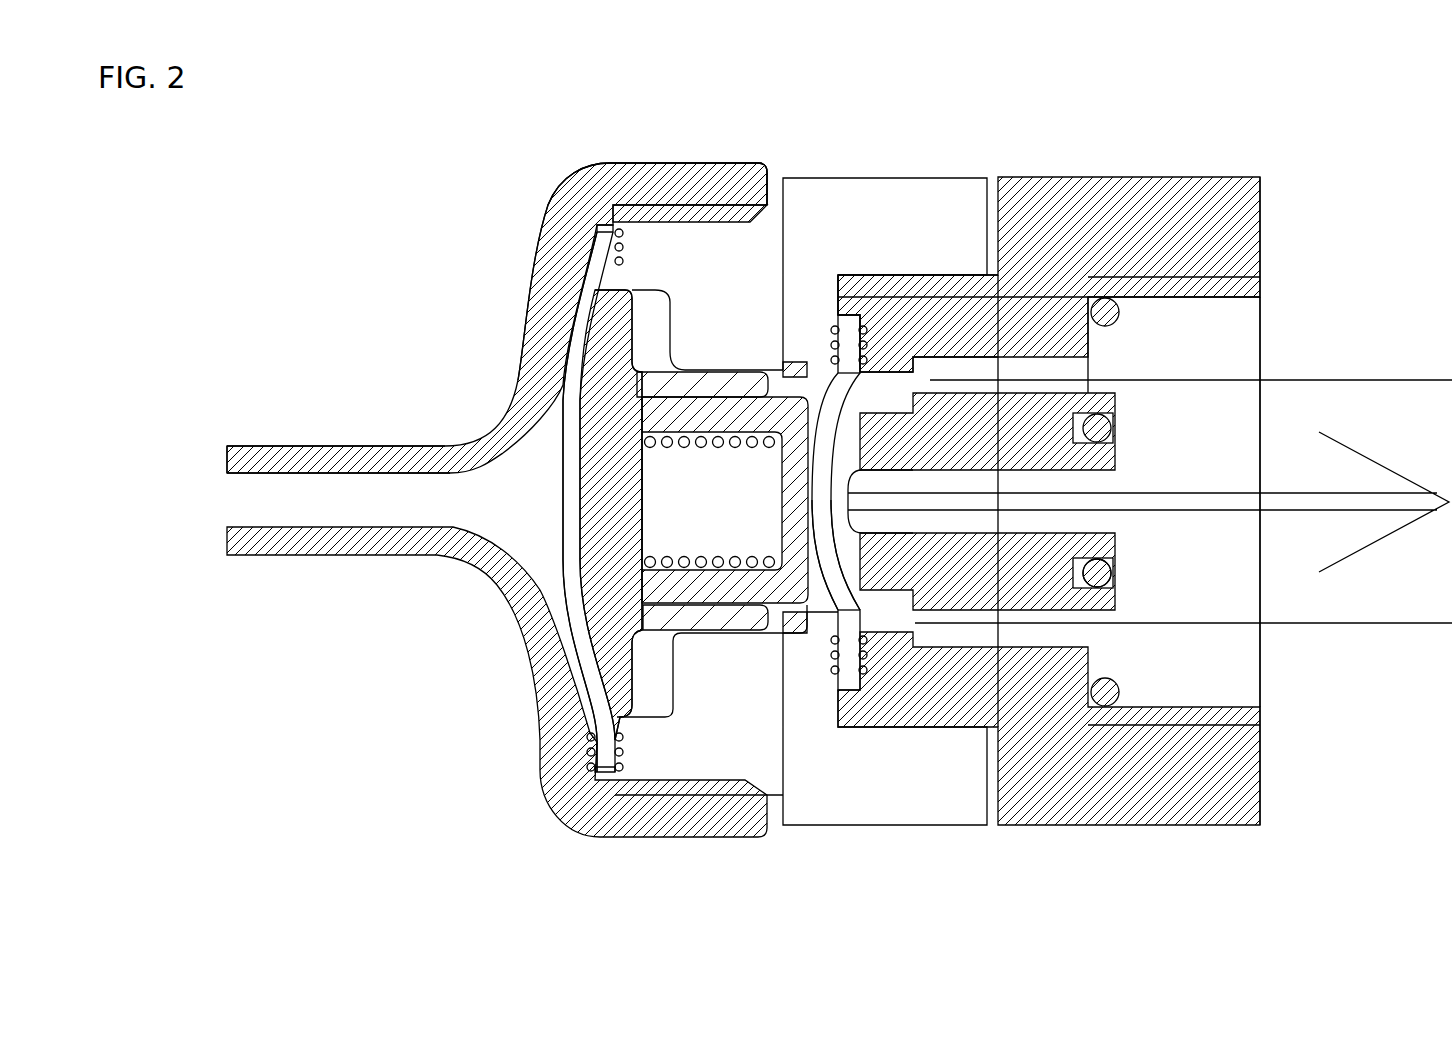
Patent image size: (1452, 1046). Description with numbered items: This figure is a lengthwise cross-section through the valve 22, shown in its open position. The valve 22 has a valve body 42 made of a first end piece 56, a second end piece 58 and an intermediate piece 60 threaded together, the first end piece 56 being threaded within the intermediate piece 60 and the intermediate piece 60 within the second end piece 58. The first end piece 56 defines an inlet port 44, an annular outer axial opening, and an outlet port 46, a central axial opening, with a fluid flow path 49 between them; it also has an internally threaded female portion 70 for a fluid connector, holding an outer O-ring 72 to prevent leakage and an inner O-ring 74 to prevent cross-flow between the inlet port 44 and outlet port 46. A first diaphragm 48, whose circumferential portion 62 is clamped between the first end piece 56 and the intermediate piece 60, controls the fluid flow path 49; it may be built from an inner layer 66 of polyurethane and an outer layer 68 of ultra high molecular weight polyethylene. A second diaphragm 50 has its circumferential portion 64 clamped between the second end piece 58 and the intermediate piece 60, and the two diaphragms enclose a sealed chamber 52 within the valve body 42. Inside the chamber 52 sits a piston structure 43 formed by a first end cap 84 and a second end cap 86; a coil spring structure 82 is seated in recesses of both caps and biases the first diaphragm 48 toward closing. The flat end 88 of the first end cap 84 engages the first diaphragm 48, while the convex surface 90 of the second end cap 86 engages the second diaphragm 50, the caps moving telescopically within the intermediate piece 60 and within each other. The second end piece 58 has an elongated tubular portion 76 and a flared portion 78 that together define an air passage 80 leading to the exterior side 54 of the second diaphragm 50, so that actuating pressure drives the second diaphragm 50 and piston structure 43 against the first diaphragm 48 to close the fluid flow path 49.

The valve 22 is at (1310, 196).
The valve body 42 is at (702, 160).
The piston structure 43 is at (596, 370).
The inlet port 44 is at (1047, 358).
The outlet port 46 is at (1117, 470).
The first diaphragm 48 is at (832, 628).
The fluid flow path 49 is at (1365, 380).
The second diaphragm 50 is at (553, 590).
The sealed chamber 52 is at (654, 320).
The exterior side 54 is at (563, 530).
The first end piece 56 is at (1200, 177).
The second end piece 58 is at (570, 184).
The intermediate piece 60 is at (897, 177).
The circumferential portion 62 is at (866, 672).
The circumferential portion 64 is at (594, 248).
The inner layer 66 is at (838, 317).
The outer layer 68 is at (863, 328).
The female portion 70 is at (1216, 707).
The outer O-ring 72 is at (1120, 693).
The inner O-ring 74 is at (1117, 573).
The tubular portion 76 is at (320, 446).
The flared portion 78 is at (537, 274).
The air passage 80 is at (282, 506).
The spring structure 82 is at (718, 565).
The first end cap 84 is at (780, 603).
The second end cap 86 is at (613, 682).
The flat end 88 is at (813, 415).
The surface 90 is at (582, 396).